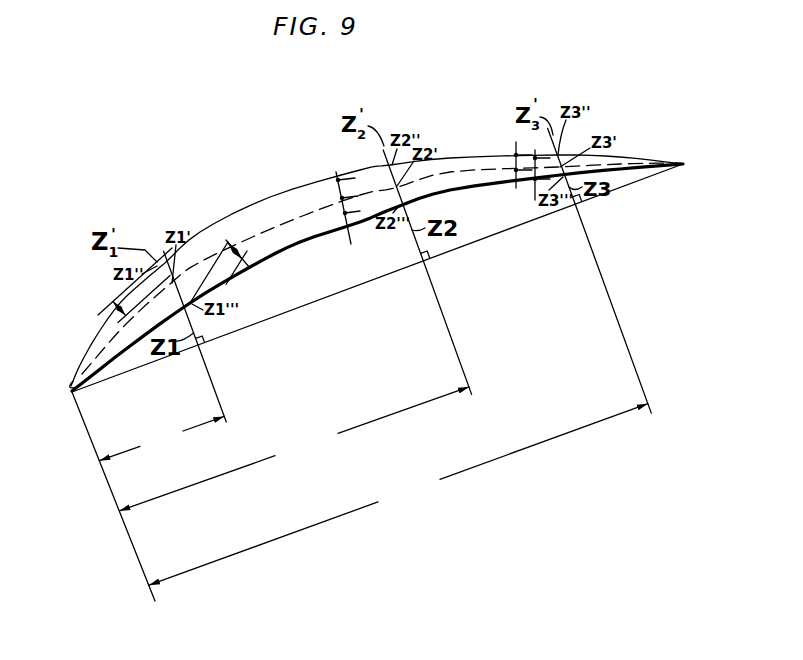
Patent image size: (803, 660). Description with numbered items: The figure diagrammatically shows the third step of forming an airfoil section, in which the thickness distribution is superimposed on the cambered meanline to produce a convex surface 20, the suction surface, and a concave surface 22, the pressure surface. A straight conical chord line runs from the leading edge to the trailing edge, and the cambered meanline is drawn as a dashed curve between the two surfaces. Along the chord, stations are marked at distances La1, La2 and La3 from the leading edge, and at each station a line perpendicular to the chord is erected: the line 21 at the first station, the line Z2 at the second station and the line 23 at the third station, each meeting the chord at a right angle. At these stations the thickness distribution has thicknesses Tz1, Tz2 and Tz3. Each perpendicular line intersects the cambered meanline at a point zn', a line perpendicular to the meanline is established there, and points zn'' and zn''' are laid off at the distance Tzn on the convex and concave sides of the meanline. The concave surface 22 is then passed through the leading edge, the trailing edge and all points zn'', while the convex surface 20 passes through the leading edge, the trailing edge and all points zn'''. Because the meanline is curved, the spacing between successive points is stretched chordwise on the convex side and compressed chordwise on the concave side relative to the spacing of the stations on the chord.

The convex surface 20 is at (270, 197).
The concave surface 22 is at (300, 242).
The station line Z1 21 is at (203, 348).
The station line Z3 23 is at (580, 206).
The line Z2 perpendicular to the conical chord line Z2 is at (430, 262).
The distance La1 from the leading edge La1 is at (161, 438).
The distance La2 from the leading edge La2 is at (294, 449).
The distance La3 from the leading edge La3 is at (398, 495).
The thickness Tz1 is at (112, 302).
The thickness Tz2 is at (338, 176).
The thickness Tz3 is at (516, 142).